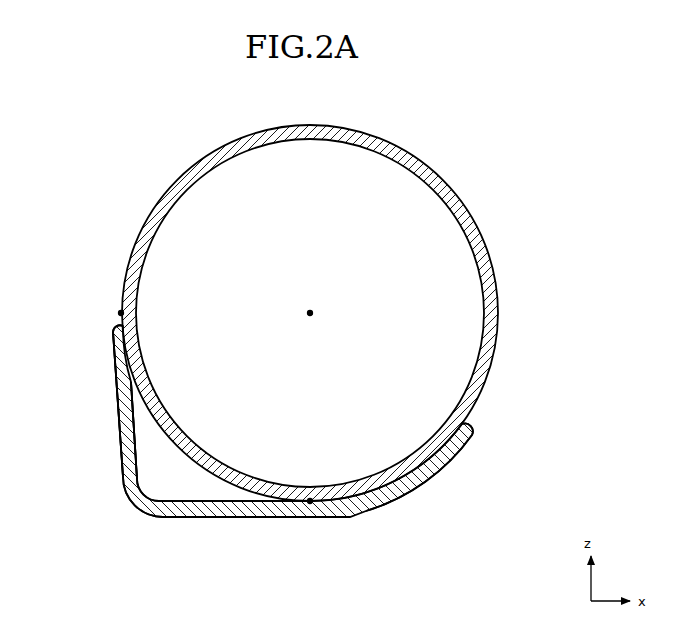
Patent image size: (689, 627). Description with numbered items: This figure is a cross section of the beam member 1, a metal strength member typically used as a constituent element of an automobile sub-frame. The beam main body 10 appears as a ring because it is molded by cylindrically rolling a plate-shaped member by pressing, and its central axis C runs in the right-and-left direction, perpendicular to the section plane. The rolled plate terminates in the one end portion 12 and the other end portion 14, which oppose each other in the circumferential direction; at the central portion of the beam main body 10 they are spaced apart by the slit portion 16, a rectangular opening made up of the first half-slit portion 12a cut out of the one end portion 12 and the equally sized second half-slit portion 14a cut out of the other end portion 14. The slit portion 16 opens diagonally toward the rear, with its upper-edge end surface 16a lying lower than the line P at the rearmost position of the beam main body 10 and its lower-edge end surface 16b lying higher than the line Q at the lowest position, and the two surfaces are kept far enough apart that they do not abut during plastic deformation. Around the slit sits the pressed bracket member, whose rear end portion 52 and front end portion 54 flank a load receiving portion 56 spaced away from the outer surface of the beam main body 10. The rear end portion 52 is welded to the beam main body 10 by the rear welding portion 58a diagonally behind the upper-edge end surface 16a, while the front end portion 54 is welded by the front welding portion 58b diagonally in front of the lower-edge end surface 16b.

The beam member 1 is at (497, 78).
The beam main body 10 is at (406, 126).
The one end portion 12 is at (163, 430).
The first half-slit portion 12a is at (187, 425).
The other end portion 14 is at (173, 512).
The second half-slit portion 14a is at (196, 446).
The slit portion 16 is at (168, 462).
The upper-edge end surface 16a is at (122, 456).
The lower-edge end surface 16b is at (198, 447).
The rear end portion 52 is at (118, 370).
The front end portion 54 is at (468, 445).
The load receiving portion 56 is at (250, 520).
The rear welding portion 58a is at (112, 336).
The front welding portion 58b is at (472, 430).
The central axis C is at (313, 311).
The line at the rearmost position P is at (117, 312).
The line at the lowest position Q is at (307, 508).